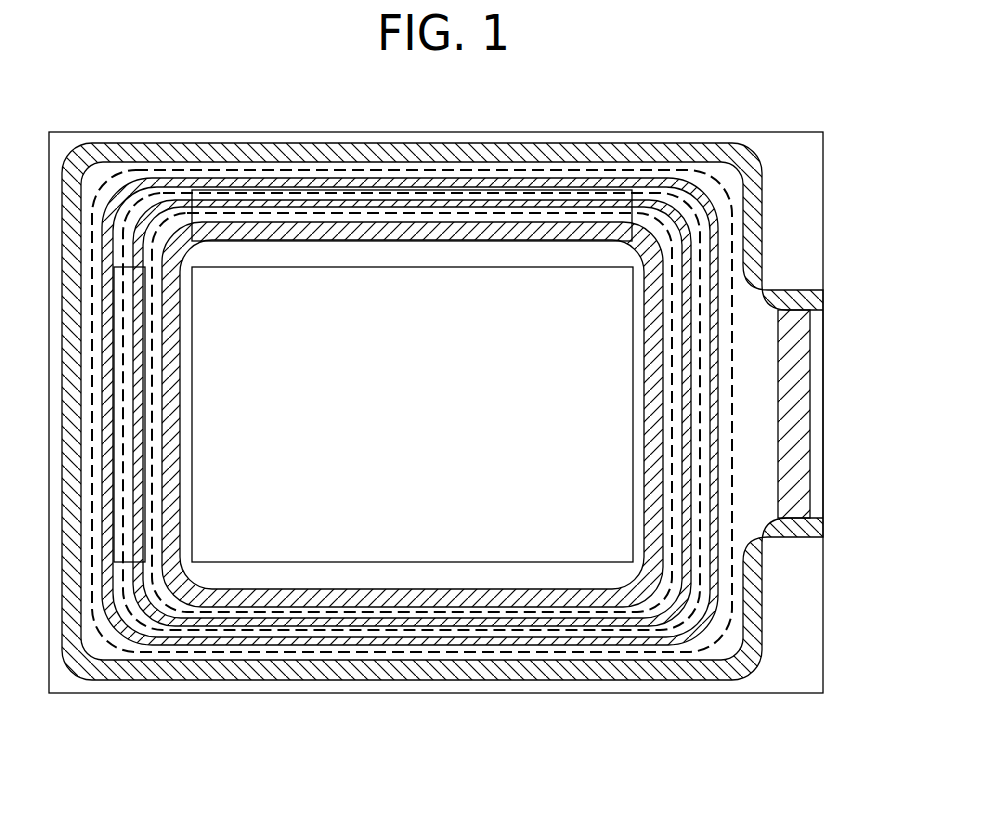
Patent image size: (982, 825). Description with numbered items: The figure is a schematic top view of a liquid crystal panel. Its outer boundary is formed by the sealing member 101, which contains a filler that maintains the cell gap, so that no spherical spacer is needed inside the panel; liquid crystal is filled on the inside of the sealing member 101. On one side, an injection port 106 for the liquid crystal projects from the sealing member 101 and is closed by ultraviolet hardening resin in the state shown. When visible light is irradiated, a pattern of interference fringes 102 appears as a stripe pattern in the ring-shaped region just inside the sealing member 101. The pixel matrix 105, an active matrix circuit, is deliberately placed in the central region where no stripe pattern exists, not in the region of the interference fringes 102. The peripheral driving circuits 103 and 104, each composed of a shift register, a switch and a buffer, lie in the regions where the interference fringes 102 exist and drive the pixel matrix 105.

The sealing member 101 is at (512, 158).
The interference fringes 102 is at (602, 175).
The peripheral driving circuit 103 is at (623, 198).
The peripheral driving circuit 104 is at (137, 510).
The pixel matrix 105 is at (452, 548).
The injection port 106 is at (805, 420).